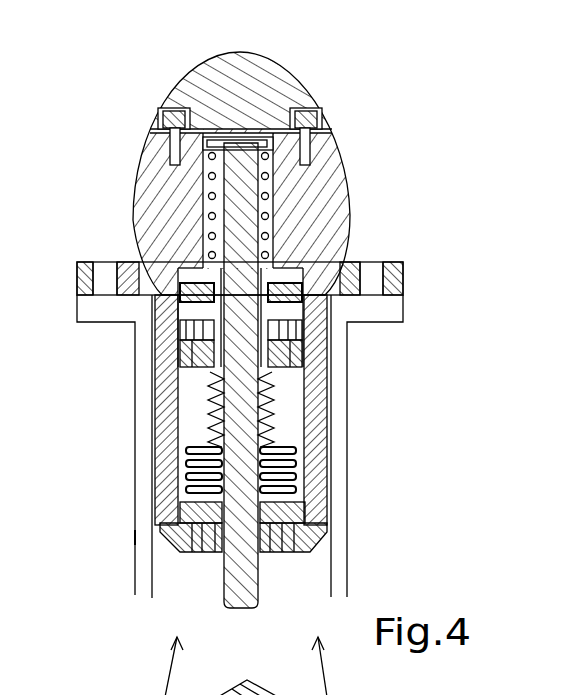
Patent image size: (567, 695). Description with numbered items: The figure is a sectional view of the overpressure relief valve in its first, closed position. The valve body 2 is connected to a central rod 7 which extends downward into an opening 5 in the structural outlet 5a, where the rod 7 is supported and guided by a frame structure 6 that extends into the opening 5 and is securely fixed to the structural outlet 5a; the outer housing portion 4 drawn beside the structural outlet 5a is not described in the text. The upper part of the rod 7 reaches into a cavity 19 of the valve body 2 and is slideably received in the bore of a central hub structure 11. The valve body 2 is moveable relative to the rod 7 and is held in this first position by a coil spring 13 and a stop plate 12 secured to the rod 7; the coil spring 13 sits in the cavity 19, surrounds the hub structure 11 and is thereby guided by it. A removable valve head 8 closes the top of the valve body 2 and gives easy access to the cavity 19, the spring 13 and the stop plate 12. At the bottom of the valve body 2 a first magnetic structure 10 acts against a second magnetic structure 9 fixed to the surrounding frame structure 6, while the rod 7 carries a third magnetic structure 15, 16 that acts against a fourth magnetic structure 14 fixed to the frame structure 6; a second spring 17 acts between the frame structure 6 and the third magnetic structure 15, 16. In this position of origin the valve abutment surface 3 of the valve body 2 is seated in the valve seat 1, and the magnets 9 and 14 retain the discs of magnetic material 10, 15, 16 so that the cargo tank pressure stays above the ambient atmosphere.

The valve seat 1 is at (347, 263).
The valve body 2 is at (345, 181).
The valve abutment surface 3 is at (140, 246).
The outer housing 4 is at (400, 322).
The opening 5 is at (292, 408).
The structural outlet 5a is at (142, 537).
The frame structure 6 is at (331, 333).
The central rod 7 is at (230, 595).
The valve head 8 is at (262, 92).
The second magnetic structure 9 is at (178, 337).
The first magnetic structure 10 is at (178, 306).
The central hub structure 11 is at (318, 145).
The stop plate 12 is at (270, 132).
The coil spring 13 is at (190, 190).
The fourth magnetic structure 14 is at (315, 508).
The third magnetic structure 15 is at (300, 463).
The third magnetic structure 16 is at (300, 440).
The second spring 17 is at (215, 398).
The cavity 19 is at (273, 207).